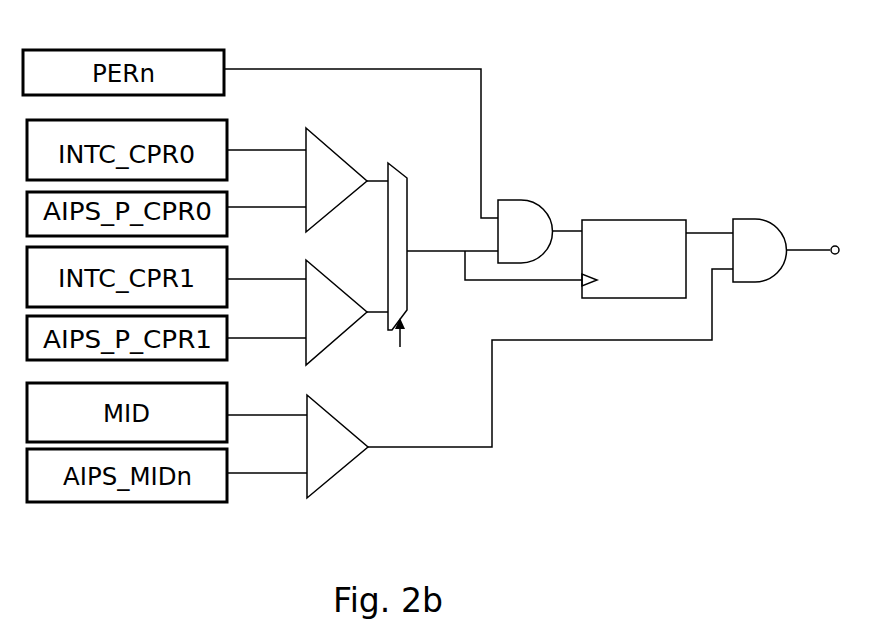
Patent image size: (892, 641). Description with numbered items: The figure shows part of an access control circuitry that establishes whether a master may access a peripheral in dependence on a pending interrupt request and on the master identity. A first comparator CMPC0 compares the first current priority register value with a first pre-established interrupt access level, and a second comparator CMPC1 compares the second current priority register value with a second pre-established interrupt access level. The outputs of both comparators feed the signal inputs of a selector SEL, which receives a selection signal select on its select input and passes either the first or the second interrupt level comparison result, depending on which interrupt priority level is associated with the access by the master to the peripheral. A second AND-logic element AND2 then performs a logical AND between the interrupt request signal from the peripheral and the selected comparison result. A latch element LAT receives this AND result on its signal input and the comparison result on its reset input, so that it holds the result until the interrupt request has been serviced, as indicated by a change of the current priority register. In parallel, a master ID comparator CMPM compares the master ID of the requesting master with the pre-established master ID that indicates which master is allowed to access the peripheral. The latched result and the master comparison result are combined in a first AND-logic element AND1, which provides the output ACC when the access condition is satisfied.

The first comparator CMPC0 is at (336, 151).
The second comparator CMPC1 is at (332, 345).
The master ID comparator CMPM is at (342, 478).
The selector SEL is at (406, 180).
The selection signal select is at (400, 341).
The second AND-logic element AND2 is at (528, 203).
The latch element LAT is at (634, 220).
The first AND-logic element AND1 is at (752, 219).
The output ACC is at (836, 247).